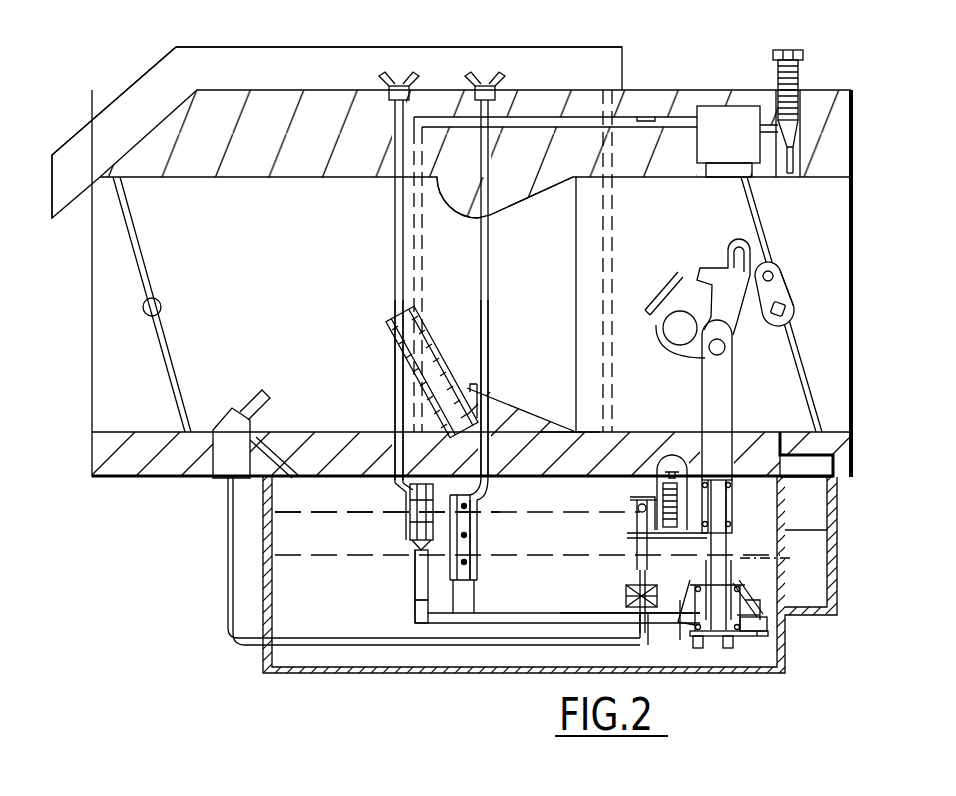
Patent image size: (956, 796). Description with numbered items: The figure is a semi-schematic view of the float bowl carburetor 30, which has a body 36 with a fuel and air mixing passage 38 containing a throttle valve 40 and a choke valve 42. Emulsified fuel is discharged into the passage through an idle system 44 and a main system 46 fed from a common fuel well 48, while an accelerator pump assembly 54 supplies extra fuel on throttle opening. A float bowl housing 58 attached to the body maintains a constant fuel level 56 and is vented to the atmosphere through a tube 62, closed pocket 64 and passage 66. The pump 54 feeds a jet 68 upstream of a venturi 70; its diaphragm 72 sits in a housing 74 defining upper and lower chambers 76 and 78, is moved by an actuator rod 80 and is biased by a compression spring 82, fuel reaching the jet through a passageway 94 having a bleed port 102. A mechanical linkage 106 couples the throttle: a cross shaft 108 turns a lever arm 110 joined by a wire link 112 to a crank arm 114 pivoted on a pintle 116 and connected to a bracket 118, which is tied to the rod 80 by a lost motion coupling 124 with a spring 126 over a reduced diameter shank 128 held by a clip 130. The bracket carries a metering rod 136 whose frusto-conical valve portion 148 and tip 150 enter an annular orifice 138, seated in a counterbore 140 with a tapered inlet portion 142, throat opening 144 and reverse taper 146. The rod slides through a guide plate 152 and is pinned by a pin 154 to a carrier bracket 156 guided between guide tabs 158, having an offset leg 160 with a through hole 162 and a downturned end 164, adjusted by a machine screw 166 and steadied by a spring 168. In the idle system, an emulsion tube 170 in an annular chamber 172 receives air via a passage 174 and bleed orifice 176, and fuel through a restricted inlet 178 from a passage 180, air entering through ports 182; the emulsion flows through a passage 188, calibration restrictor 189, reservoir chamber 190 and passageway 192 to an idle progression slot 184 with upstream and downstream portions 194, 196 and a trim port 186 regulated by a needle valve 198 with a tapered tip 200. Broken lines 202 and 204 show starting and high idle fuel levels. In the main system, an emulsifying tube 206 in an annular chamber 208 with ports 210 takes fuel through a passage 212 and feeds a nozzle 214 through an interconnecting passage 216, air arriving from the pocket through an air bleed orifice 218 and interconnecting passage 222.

The float bowl carburetor 30 is at (150, 42).
The body 36 is at (660, 115).
The fuel and air mixing passage 38 is at (122, 385).
The throttle valve 40 is at (802, 372).
The choke valve 42 is at (127, 243).
The idle system 44 is at (390, 500).
The main system 46 is at (478, 503).
The fuel well 48 is at (497, 622).
The accelerator pump assembly 54 is at (774, 585).
The fuel level 56 is at (320, 536).
The float bowl housing 58 is at (278, 673).
The tube 62 is at (80, 138).
The closed pocket 64 is at (222, 46).
The passage 66 is at (600, 100).
The jet 68 is at (248, 393).
The venturi 70 is at (438, 212).
The diaphragm 72 is at (787, 643).
The housing 74 is at (815, 603).
The upper chamber 76 is at (700, 645).
The lower chamber 78 is at (770, 655).
The actuator rod 80 is at (780, 560).
The compression spring 82 is at (760, 617).
The connecting passageway 94 is at (226, 640).
The bleed port 102 is at (218, 470).
The mechanical linkage 106 is at (684, 266).
The cross shaft 108 is at (785, 300).
The lever arm 110 is at (786, 268).
The wire link 112 is at (758, 236).
The crank arm 114 is at (662, 295).
The pintle 116 is at (658, 327).
The bracket 118 is at (690, 358).
The lost motion coupling 124 is at (800, 470).
The spring 126 is at (740, 487).
The reduced diameter shank 128 is at (730, 485).
The clip 130 is at (723, 417).
The metering rod 136 is at (630, 555).
The annular orifice 138 is at (626, 604).
The counterbore 140 is at (690, 622).
The tapered inlet portion 142 is at (666, 594).
The throat opening 144 is at (560, 627).
The reverse taper 146 is at (682, 605).
The frusto-conical valve portion 148 is at (626, 595).
The tip 150 is at (640, 630).
The guide plate 152 is at (640, 531).
The pin 154 is at (598, 437).
The carrier bracket 156 is at (647, 470).
The guide tabs 158 is at (665, 456).
The offset leg 160 is at (740, 505).
The through hole 162 is at (760, 540).
The downturned end 164 is at (740, 522).
The machine screw 166 is at (658, 465).
The spring 168 is at (635, 500).
The emulsion tube 170 is at (413, 543).
The annular chamber 172 is at (408, 516).
The passage 174 is at (395, 385).
The bleed orifice 176 is at (385, 82).
The restricted inlet 178 is at (416, 560).
The passage 180 is at (422, 583).
The ports 182 is at (330, 423).
The idle progression slot 184 is at (712, 172).
The trim port 186 is at (787, 175).
The passage 188 is at (422, 228).
The calibration restrictor 189 is at (645, 115).
The reservoir chamber 190 is at (714, 104).
The passageway 192 is at (729, 152).
The upstream portion 194 is at (735, 180).
The downstream portion 196 is at (753, 177).
The needle valve 198 is at (803, 60).
The tapered frusto conical tip 200 is at (798, 135).
The broken line 202 is at (308, 510).
The broken line 204 is at (313, 560).
The emulsifying tube 206 is at (484, 542).
The annular chamber 208 is at (478, 566).
The ports 210 is at (450, 598).
The passage 212 is at (463, 607).
The nozzle 214 is at (390, 324).
The interconnecting passage 216 is at (470, 430).
The air bleed orifice 218 is at (473, 82).
The interconnecting passage 222 is at (496, 192).